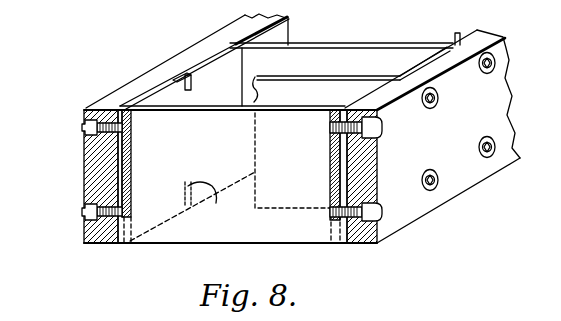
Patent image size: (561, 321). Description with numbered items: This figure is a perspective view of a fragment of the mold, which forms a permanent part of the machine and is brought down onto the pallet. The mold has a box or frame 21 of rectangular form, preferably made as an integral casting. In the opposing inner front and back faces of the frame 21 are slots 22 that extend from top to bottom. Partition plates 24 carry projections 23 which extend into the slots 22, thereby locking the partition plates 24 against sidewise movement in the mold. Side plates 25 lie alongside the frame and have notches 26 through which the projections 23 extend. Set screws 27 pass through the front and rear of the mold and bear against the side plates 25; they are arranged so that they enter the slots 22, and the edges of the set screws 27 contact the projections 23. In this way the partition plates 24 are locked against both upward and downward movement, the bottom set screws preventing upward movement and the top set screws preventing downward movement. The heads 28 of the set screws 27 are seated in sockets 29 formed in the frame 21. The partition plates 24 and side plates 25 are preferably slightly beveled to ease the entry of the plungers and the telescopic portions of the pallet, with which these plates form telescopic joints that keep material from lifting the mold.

The box or frame 21 is at (124, 90).
The slots 22 is at (88, 172).
The projections 23 is at (128, 117).
The partition plates 24 is at (270, 128).
The side plates 25 is at (132, 147).
The notches 26 is at (210, 80).
The set screws 27 is at (132, 192).
The heads 28 is at (84, 130).
The sockets 29 is at (87, 121).